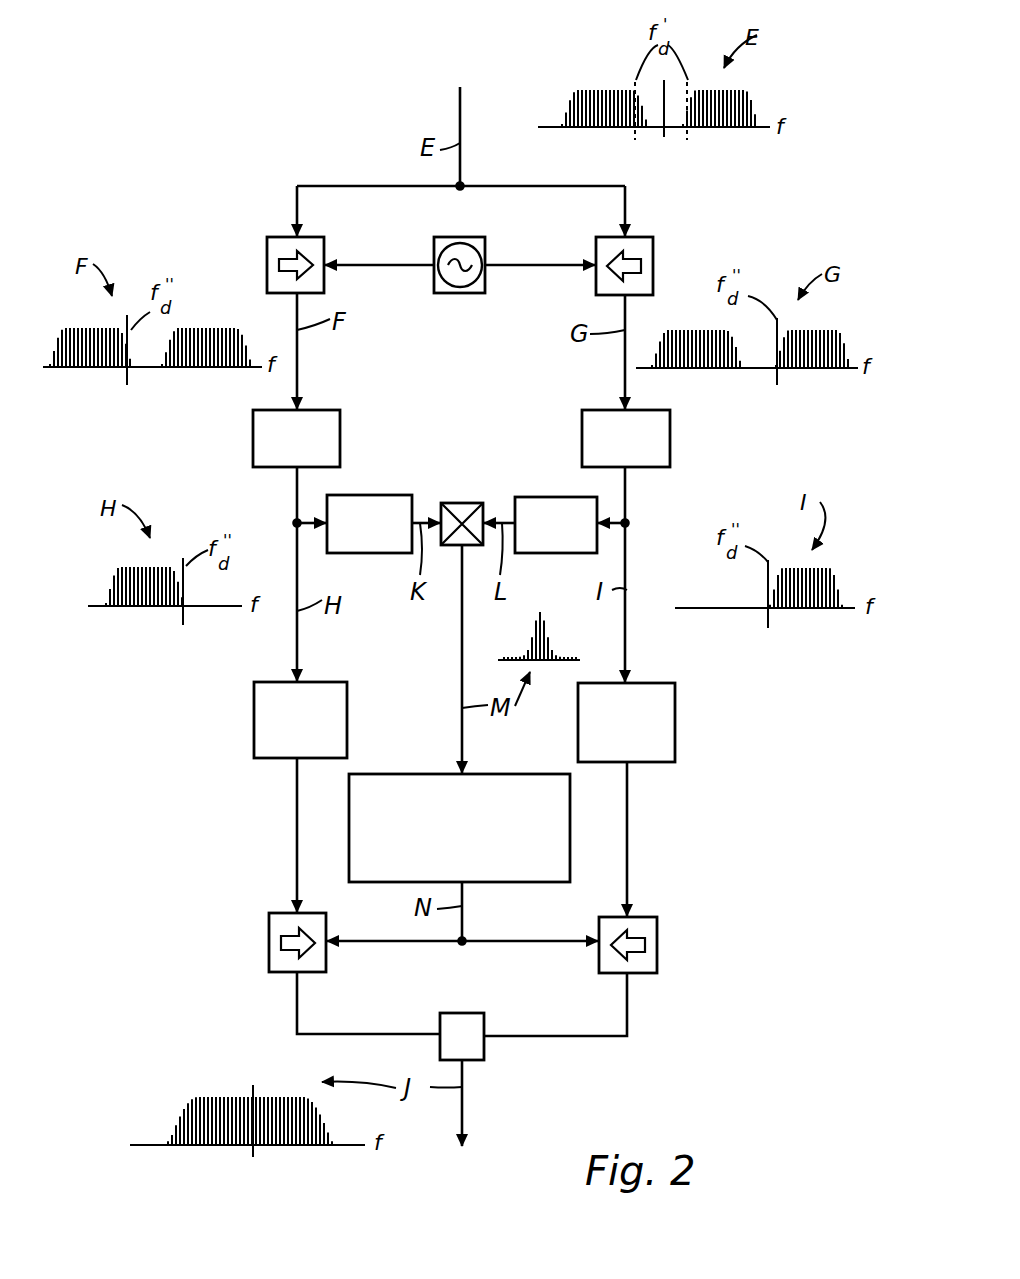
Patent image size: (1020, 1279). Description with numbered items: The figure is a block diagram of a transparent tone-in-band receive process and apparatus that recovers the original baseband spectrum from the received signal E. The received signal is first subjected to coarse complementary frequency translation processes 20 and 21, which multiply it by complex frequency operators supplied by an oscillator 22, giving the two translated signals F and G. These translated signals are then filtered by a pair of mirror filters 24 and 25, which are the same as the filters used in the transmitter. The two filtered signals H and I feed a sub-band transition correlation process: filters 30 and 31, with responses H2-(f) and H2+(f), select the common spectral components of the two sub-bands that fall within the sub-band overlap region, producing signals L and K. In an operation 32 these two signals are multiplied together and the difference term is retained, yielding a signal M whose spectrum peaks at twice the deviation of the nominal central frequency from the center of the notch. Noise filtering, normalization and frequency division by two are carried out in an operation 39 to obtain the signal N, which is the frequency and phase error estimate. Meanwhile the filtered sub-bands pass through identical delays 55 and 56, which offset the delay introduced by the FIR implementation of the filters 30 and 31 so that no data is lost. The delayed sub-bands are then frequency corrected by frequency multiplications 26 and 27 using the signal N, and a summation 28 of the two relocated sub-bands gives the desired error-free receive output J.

The coarse complementary frequency translation process 20 is at (267, 247).
The coarse complementary frequency translation process 21 is at (653, 263).
The oscillator 22 is at (460, 293).
The mirror filter 24 is at (340, 430).
The mirror filter 25 is at (582, 428).
The frequency multiplication 26 is at (269, 936).
The frequency multiplication 27 is at (657, 951).
The summation 28 is at (472, 1013).
The filter 30 is at (545, 497).
The filter 31 is at (384, 495).
The operation 32 is at (460, 503).
The operation 39 is at (425, 774).
The delay 55 is at (254, 724).
The delay 56 is at (675, 723).